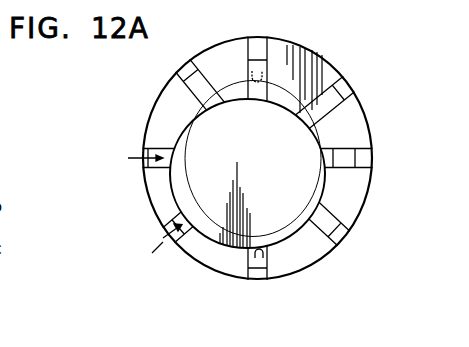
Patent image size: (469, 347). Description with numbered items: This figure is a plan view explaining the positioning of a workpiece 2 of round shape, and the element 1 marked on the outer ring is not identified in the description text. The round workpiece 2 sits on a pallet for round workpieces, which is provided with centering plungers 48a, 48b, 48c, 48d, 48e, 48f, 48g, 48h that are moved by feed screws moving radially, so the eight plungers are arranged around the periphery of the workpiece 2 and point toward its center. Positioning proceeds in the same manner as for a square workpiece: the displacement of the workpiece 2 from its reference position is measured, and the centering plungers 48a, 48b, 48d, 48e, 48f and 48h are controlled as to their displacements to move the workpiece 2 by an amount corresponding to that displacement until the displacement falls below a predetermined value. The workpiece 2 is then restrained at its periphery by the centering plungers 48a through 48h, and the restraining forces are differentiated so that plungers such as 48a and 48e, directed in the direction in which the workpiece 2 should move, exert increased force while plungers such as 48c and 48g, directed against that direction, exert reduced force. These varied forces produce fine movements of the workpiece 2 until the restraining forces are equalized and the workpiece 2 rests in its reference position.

The ring body 1 is at (373, 128).
The workpiece 2 is at (312, 146).
The centering plunger 48a is at (347, 169).
The centering plunger 48b is at (329, 233).
The centering plunger 48c is at (253, 269).
The centering plunger 48d is at (158, 221).
The centering plunger 48e is at (160, 151).
The centering plunger 48f is at (197, 78).
The centering plunger 48g is at (270, 63).
The centering plunger 48h is at (336, 112).